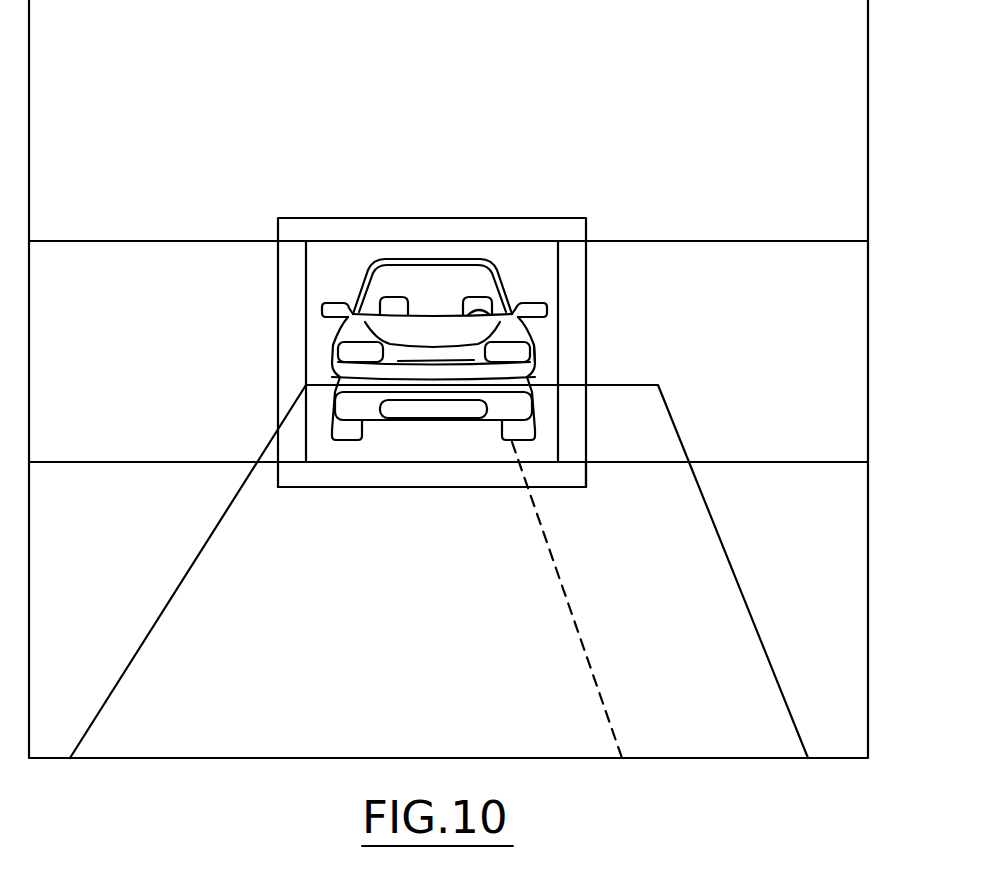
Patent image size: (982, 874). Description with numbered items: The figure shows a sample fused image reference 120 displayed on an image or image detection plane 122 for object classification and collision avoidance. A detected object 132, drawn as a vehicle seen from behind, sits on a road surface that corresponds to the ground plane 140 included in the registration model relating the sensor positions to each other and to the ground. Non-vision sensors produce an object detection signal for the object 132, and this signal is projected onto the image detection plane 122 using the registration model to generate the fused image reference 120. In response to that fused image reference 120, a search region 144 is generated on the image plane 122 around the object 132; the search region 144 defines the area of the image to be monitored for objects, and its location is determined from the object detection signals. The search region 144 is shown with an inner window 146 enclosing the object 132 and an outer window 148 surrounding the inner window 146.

The fused image reference 120 is at (346, 267).
The image detection plane 122 is at (868, 309).
The object 132 is at (537, 350).
The ground plane 140 is at (775, 463).
The search region 144 is at (457, 218).
The inner window 146 is at (560, 427).
The outer window 148 is at (586, 472).